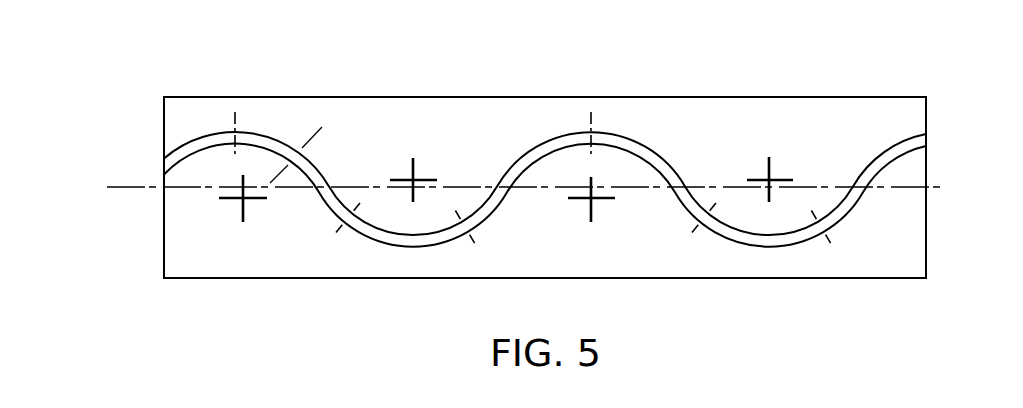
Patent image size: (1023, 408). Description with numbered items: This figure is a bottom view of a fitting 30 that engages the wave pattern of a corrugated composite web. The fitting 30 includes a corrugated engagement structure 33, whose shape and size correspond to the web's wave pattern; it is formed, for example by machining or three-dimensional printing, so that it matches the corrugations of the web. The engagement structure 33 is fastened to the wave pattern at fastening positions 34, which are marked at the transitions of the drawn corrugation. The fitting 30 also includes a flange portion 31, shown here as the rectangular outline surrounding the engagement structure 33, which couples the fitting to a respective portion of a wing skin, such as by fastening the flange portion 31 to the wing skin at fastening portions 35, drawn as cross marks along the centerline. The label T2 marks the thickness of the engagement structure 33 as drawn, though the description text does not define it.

The fitting 30 is at (530, 182).
The flange portion 31 is at (579, 163).
The engagement structure 33 is at (586, 173).
The fastening positions 34 is at (583, 269).
The fastening portions 35 is at (514, 162).
The fin thickness T2 is at (311, 144).